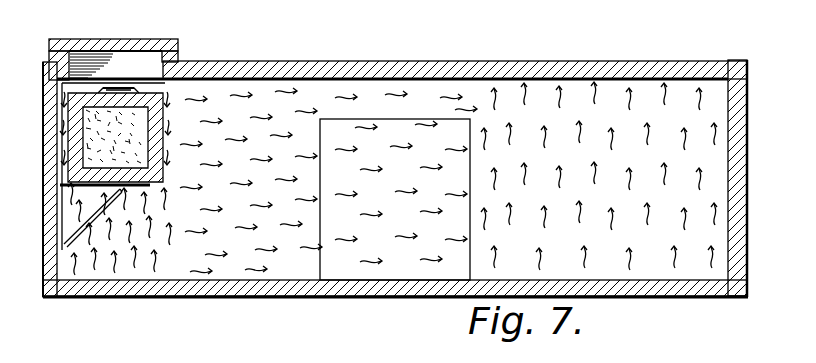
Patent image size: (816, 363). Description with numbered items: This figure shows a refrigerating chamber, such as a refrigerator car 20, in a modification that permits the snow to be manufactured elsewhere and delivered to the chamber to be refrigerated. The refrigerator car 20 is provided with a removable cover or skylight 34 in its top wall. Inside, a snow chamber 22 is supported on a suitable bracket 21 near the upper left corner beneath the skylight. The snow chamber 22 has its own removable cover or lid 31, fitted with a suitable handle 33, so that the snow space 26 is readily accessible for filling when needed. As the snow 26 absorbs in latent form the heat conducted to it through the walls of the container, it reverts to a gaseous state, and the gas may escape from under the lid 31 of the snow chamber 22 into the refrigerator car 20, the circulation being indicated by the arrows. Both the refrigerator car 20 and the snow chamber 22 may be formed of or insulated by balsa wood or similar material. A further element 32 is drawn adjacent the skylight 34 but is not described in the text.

The refrigerator car 20 is at (147, 297).
The bracket 21 is at (60, 206).
The snow chamber 22 is at (80, 144).
The snow space 26 is at (127, 152).
The removable cover 31 is at (134, 87).
The filter 32 is at (92, 91).
The handle 33 is at (122, 88).
The removable cover 34 is at (147, 40).